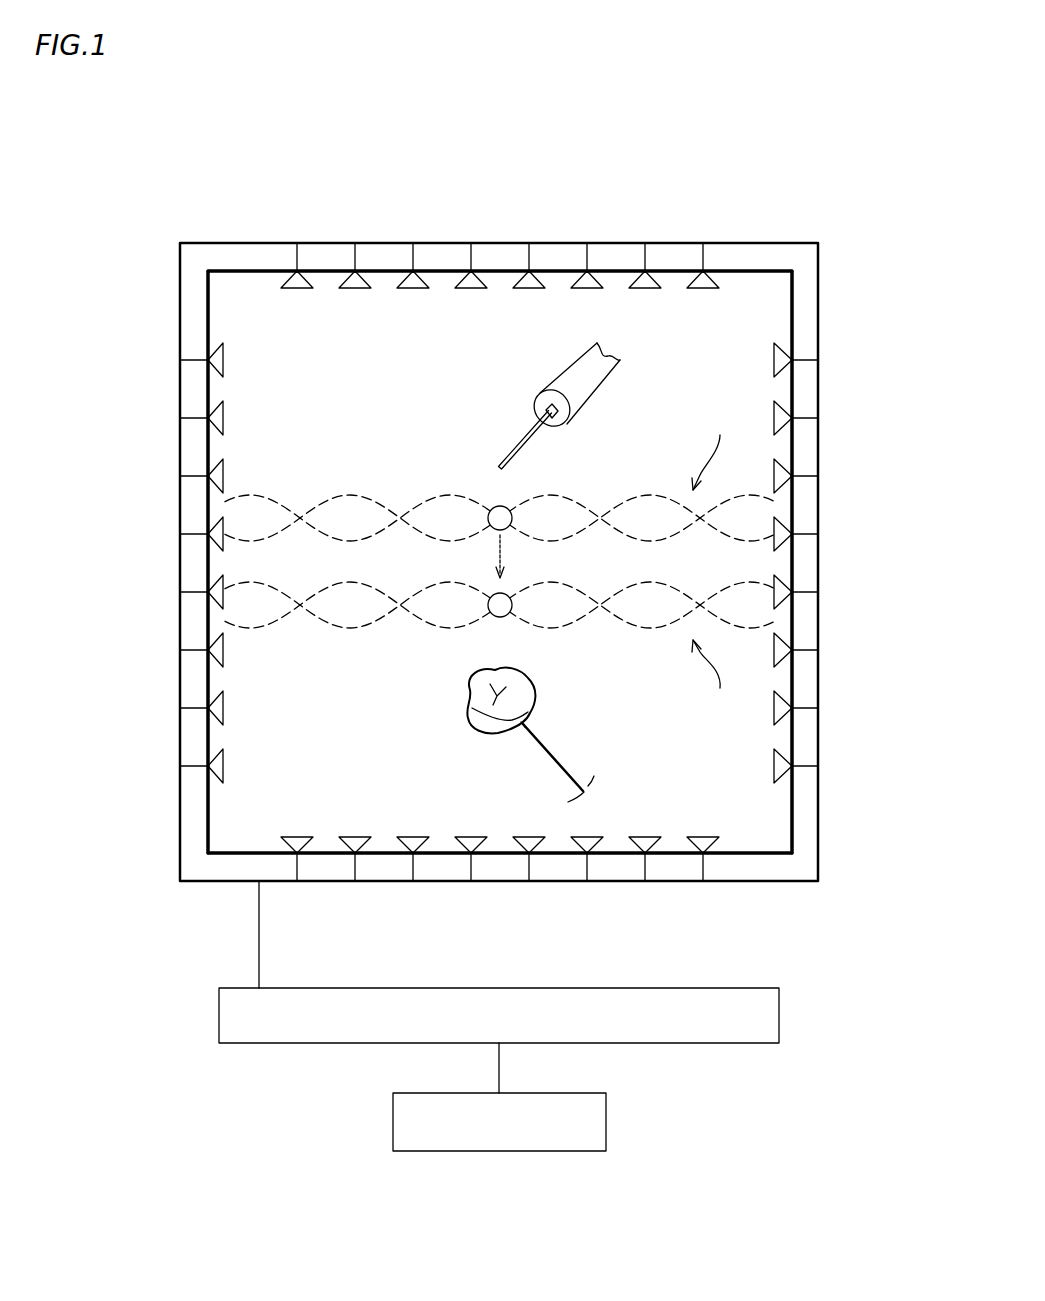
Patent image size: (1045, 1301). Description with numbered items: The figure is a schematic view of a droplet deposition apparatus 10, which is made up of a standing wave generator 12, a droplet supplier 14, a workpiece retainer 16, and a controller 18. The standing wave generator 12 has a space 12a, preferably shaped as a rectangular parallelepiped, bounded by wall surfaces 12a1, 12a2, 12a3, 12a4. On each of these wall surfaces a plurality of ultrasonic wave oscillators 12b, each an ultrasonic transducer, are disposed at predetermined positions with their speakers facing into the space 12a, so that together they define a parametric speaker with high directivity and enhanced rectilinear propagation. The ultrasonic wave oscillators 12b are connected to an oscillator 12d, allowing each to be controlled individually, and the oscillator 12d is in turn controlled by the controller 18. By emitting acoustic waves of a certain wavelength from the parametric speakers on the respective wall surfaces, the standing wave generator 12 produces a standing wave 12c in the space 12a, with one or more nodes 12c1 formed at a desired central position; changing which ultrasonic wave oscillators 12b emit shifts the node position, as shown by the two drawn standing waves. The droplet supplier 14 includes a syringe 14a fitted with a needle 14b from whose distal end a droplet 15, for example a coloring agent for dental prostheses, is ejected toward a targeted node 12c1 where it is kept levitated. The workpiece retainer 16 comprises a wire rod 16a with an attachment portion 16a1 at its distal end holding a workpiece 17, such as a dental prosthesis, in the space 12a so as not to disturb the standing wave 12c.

The droplet deposition apparatus 10 is at (693, 160).
The standing wave generator 12 is at (830, 470).
The space 12a is at (748, 270).
The wall surface 12a1 is at (262, 280).
The wall surface 12a2 is at (795, 332).
The wall surface 12a3 is at (757, 850).
The wall surface 12a4 is at (208, 800).
The ultrasonic wave oscillator 12b is at (720, 842).
The standing wave 12c is at (347, 496).
The node 12c1 is at (495, 536).
The oscillator 12d is at (745, 988).
The droplet supplier 14 is at (594, 404).
The syringe 14a is at (596, 395).
The needle 14b is at (524, 446).
The droplet 15 is at (497, 506).
The workpiece retainer 16 is at (540, 768).
The wire rod 16a is at (552, 760).
The attachment portion 16a1 is at (523, 734).
The workpiece 17 is at (545, 700).
The controller 18 is at (606, 1125).